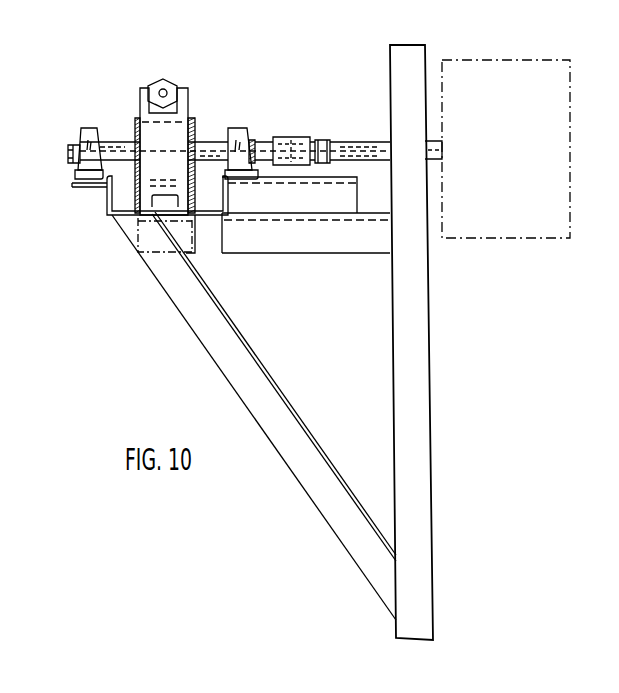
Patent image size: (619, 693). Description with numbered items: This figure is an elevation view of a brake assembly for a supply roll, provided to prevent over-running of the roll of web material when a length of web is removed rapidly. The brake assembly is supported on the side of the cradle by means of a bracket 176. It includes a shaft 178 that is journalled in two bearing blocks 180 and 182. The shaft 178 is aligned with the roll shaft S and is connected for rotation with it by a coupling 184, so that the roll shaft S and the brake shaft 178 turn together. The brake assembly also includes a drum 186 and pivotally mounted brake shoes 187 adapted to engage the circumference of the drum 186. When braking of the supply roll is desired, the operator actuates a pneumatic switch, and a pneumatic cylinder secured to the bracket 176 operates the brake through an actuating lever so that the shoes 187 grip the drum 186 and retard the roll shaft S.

The bracket 176 is at (257, 352).
The shaft 178 is at (222, 142).
The bearing block 180 is at (254, 140).
The bearing block 182 is at (80, 131).
The coupling 184 is at (298, 138).
The drum 186 is at (195, 122).
The brake shoes 187 is at (137, 122).
The roll shaft S is at (345, 142).